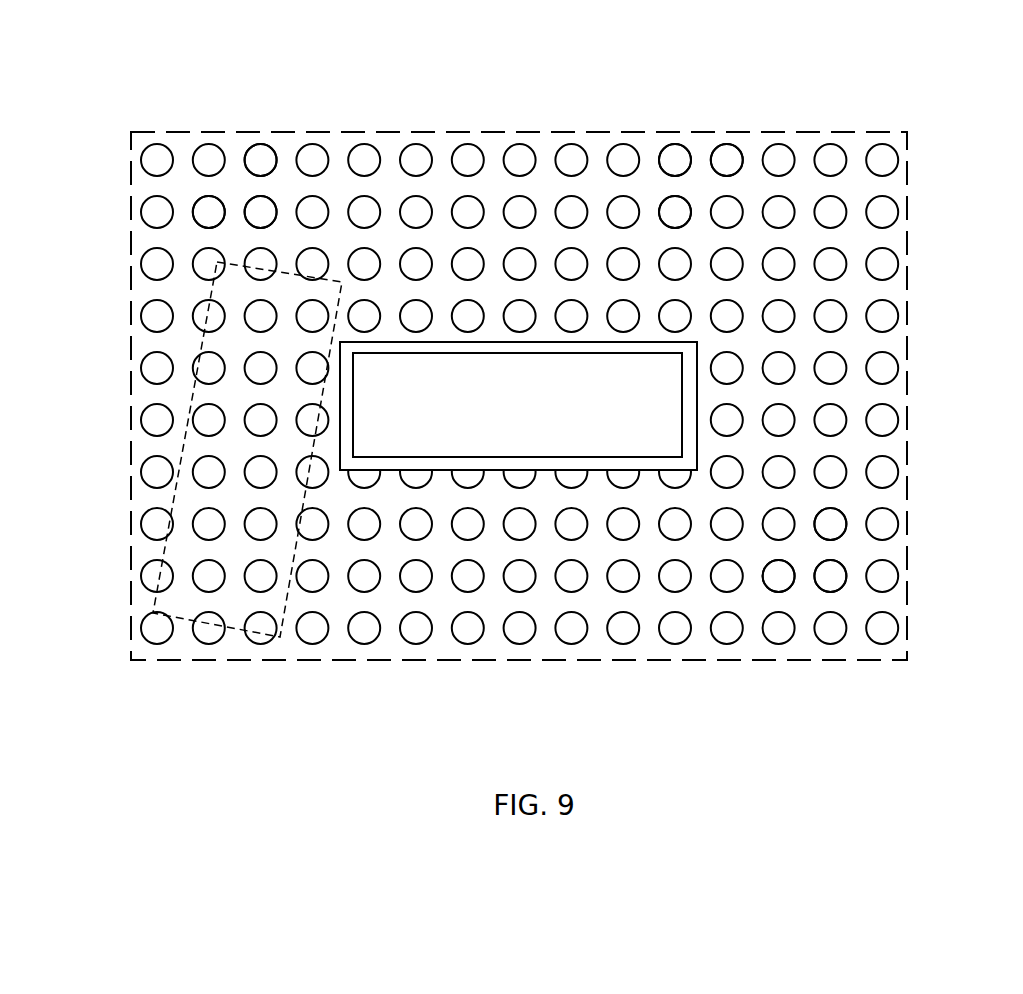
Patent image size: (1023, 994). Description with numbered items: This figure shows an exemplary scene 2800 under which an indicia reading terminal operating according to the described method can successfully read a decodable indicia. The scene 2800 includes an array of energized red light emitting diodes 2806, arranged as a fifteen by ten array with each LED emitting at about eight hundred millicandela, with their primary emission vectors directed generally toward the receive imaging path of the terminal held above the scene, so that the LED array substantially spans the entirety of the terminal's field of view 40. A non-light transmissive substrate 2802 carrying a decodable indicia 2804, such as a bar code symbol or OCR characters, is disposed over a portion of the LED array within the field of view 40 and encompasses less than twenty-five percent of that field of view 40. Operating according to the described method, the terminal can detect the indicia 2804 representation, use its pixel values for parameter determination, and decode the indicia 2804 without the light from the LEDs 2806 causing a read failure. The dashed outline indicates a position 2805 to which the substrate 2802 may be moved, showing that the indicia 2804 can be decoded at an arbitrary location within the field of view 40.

The field of view 40 is at (907, 272).
The scene 2800 is at (973, 701).
The substrate 2802 is at (445, 342).
The decodable indicia 2804 is at (517, 405).
The position 2805 is at (180, 450).
The red light emitting diodes 2806 is at (248, 199).